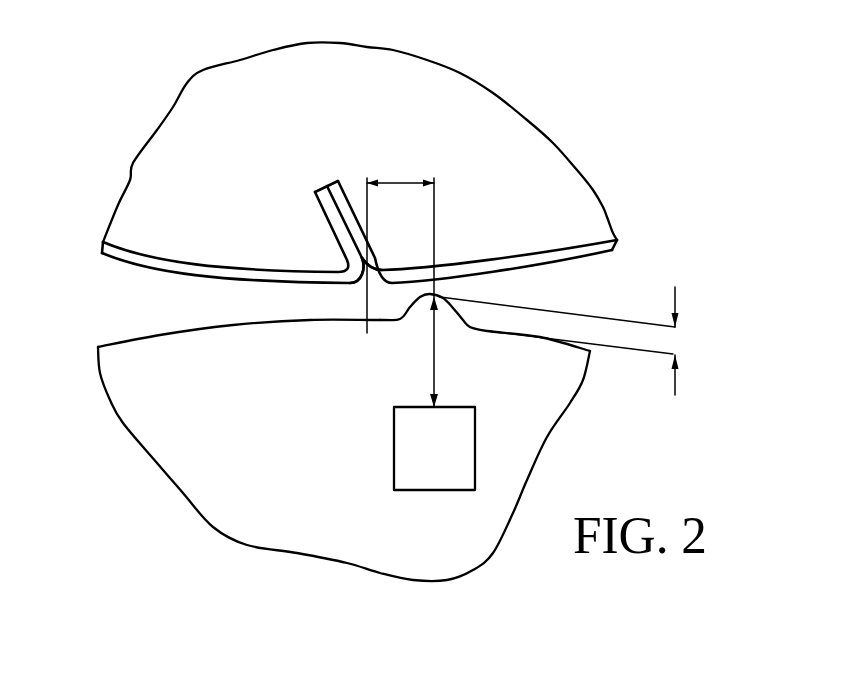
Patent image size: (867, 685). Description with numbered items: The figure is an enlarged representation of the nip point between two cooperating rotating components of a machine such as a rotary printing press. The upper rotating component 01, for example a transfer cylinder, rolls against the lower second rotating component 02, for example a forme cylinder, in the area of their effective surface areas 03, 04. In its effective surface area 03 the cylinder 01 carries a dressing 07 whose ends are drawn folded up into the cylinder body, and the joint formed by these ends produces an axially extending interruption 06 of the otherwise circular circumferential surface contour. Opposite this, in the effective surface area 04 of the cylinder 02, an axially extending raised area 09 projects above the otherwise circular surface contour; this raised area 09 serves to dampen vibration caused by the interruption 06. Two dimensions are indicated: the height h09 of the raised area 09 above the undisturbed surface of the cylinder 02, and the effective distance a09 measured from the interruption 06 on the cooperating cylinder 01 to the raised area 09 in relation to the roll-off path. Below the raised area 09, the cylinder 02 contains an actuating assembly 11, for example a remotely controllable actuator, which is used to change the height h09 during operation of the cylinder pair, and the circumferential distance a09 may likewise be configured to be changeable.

The rotating component 01 is at (273, 102).
The second rotating component 02 is at (263, 509).
The effective surface area 03 is at (122, 262).
The effective surface area 04 is at (232, 325).
The interruption 06 is at (357, 296).
The dressing 07 is at (160, 262).
The raised area 09 is at (458, 312).
The actuating assembly 11 is at (422, 473).
The effective distance a09 is at (402, 278).
The height h09 is at (579, 341).